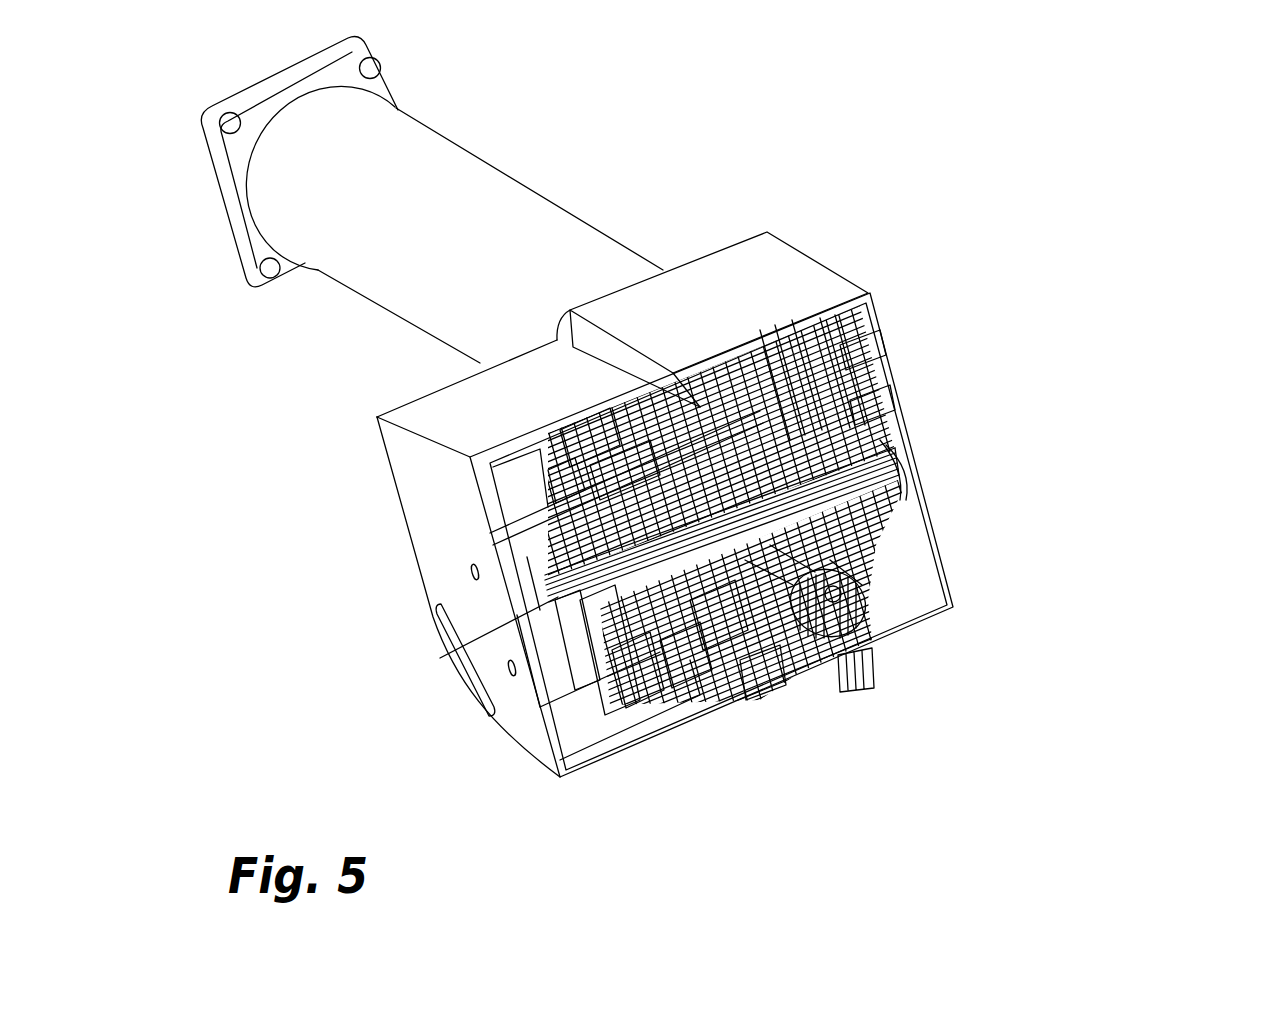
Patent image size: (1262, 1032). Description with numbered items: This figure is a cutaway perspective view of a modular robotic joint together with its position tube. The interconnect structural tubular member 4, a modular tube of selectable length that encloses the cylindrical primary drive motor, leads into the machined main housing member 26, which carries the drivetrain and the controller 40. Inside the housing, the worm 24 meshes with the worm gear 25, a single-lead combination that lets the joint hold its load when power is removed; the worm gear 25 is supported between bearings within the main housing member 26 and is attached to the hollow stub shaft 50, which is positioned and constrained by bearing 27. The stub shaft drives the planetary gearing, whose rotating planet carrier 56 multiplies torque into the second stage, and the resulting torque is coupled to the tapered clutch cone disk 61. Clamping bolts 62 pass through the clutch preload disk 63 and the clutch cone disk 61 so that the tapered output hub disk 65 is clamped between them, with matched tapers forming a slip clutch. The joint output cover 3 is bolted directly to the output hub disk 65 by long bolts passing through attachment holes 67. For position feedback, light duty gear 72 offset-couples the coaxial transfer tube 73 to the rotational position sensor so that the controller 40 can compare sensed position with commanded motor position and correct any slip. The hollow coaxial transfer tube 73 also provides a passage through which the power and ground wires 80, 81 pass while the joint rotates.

The joint output cover 3 is at (437, 512).
The interconnect structural tubular member 4 is at (410, 193).
The worm 24 is at (900, 637).
The worm gear 25 is at (880, 535).
The main housing member 26 is at (757, 277).
The bearing 27 is at (890, 377).
The controller 40 is at (868, 293).
The hollow stub shaft 50 is at (760, 693).
The planet carrier 56 is at (632, 745).
The tapered clutch cone disk 61 is at (545, 478).
The clamping bolts 62 is at (697, 710).
The clutch preload disk 63 is at (562, 548).
The tapered output hub disk 65 is at (560, 450).
The attachment holes 67 is at (505, 667).
The light duty gear 72 is at (887, 420).
The coaxial transfer tube 73 is at (609, 615).
The power wire 80 is at (575, 600).
The ground wire 81 is at (453, 663).